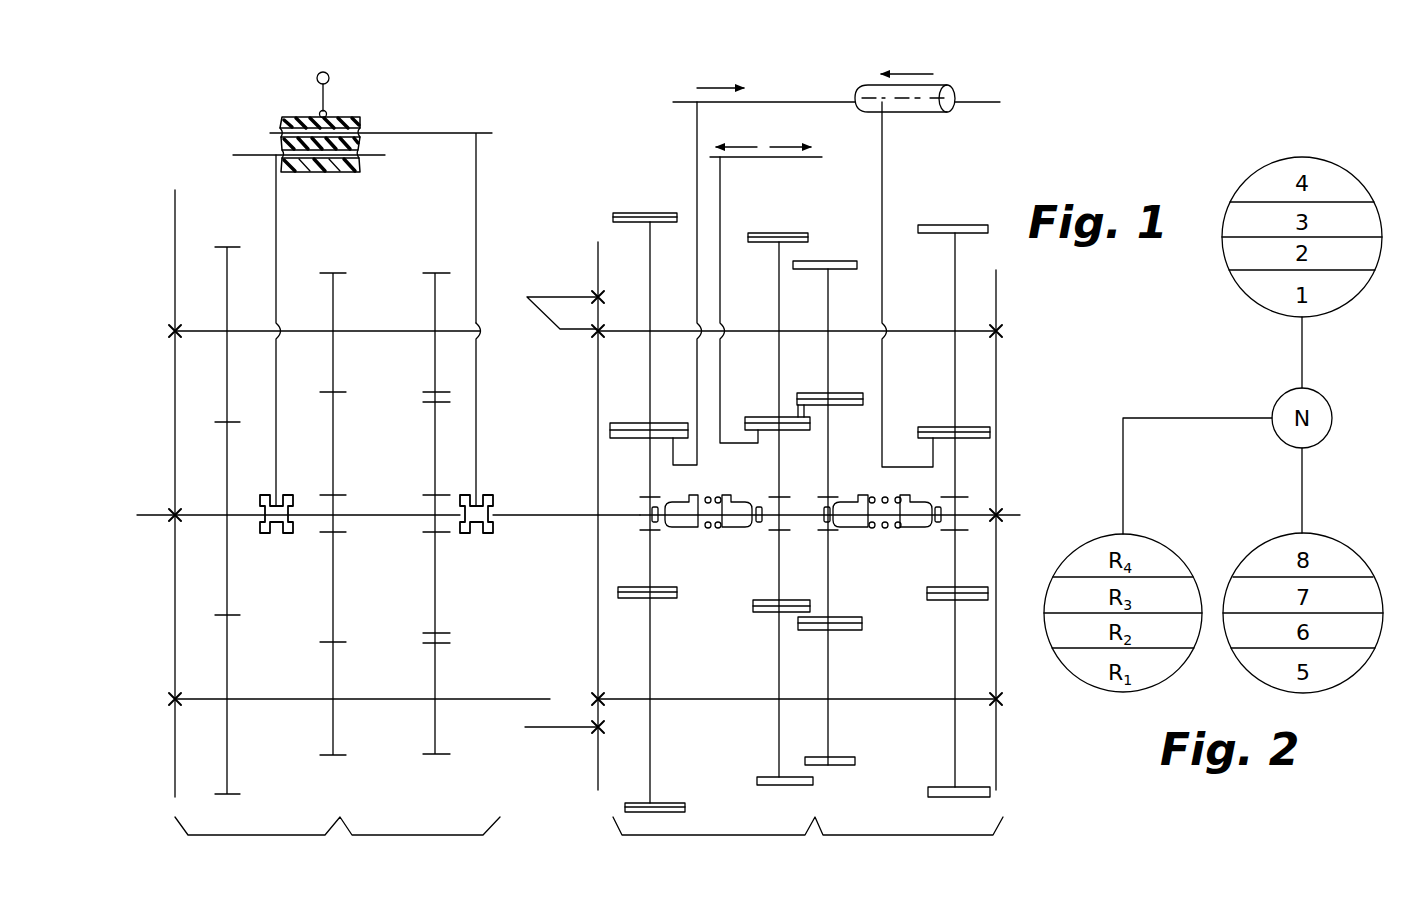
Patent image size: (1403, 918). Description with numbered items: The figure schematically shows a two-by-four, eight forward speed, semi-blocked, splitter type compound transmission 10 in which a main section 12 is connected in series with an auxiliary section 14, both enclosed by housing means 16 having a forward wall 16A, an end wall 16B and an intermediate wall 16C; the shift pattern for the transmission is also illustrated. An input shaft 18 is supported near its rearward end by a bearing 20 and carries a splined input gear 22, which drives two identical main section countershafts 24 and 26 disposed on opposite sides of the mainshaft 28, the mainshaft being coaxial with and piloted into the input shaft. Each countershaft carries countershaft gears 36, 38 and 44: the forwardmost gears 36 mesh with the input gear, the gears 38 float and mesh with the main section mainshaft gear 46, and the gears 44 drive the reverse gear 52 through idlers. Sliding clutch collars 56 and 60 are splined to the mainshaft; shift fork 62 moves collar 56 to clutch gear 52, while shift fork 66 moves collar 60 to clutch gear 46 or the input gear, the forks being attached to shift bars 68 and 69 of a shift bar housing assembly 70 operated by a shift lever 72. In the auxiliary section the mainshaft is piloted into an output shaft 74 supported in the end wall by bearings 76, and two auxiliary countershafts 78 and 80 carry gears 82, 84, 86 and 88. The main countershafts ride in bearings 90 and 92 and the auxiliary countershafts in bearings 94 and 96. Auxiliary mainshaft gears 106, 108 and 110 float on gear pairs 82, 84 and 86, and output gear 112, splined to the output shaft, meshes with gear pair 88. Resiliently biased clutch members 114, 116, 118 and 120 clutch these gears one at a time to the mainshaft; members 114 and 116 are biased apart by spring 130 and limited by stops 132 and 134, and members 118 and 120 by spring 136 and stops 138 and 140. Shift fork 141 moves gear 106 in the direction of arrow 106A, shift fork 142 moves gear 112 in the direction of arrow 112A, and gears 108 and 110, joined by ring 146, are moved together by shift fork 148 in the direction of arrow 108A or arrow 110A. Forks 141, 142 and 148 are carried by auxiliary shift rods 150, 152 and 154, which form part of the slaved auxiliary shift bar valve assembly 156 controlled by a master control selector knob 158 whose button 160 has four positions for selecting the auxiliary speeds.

The compound transmission 10 is at (909, 210).
The main section 12 is at (337, 811).
The auxiliary section 14 is at (808, 812).
The housing means 16 is at (168, 264).
The forward wall 16A is at (175, 777).
The end wall 16B is at (996, 765).
The intermediate wall 16C is at (598, 265).
The input shaft 18 is at (142, 517).
The bearing 20 is at (180, 517).
The input gear 22 is at (227, 485).
The main section countershaft 24 is at (355, 331).
The main section countershaft 26 is at (405, 700).
The mainshaft 28 is at (503, 513).
The countershaft gear 36 is at (225, 268).
The countershaft gear 38 is at (333, 292).
The countershaft gear 44 is at (435, 292).
The main section mainshaft gear 46 is at (335, 415).
The mainshaft gear (reverse gear) 52 is at (435, 433).
The sliding clutch collar 56 is at (485, 533).
The sliding clutch collar 60 is at (283, 533).
The shift fork 62 is at (477, 375).
The shift fork 66 is at (278, 410).
The shift bar (rail) 68 is at (443, 133).
The shift bar (rail) 69 is at (243, 155).
The shift bar housing assembly 70 is at (370, 124).
The shift lever 72 is at (325, 100).
The output shaft 74 is at (970, 517).
The bearings 76 is at (1002, 517).
The auxiliary section countershaft 78 is at (840, 331).
The auxiliary section countershaft 80 is at (867, 699).
The auxiliary countershaft gear 82 is at (650, 292).
The auxiliary countershaft gear 84 is at (779, 308).
The auxiliary countershaft gear 86 is at (820, 380).
The auxiliary countershaft gear 88 is at (955, 305).
The bearing 90 is at (176, 330).
The bearing 92 is at (604, 297).
The bearing 94 is at (594, 331).
The bearing 96 is at (1002, 331).
The auxiliary section mainshaft gear 106 is at (648, 468).
The arrow 106A is at (697, 88).
The auxiliary section mainshaft gear 108 is at (779, 462).
The arrow 108A is at (741, 147).
The auxiliary section mainshaft gear 110 is at (827, 450).
The arrow 110A is at (787, 143).
The output gear 112 is at (955, 457).
The arrow 112A is at (933, 74).
The resiliently biased clutch member 114 is at (686, 529).
The resiliently biased clutch member 116 is at (738, 529).
The resiliently biased clutch member 118 is at (858, 529).
The resiliently biased clutch member 120 is at (915, 529).
The spring 130 is at (708, 496).
The positive stop 132 is at (650, 522).
The positive stop 134 is at (759, 507).
The spring 136 is at (872, 496).
The stop 138 is at (826, 522).
The stop 140 is at (938, 507).
The shift fork 141 is at (697, 193).
The shift fork 142 is at (882, 172).
The ring 146 is at (798, 412).
The shift fork 148 is at (720, 210).
The auxiliary shift rod 150 is at (768, 102).
The auxiliary shift rod 152 is at (922, 112).
The auxiliary shift rod 154 is at (795, 157).
The auxiliary shift bar valve assembly 156 is at (1014, 121).
The master control selector knob 158 is at (330, 79).
The button 160 is at (314, 78).